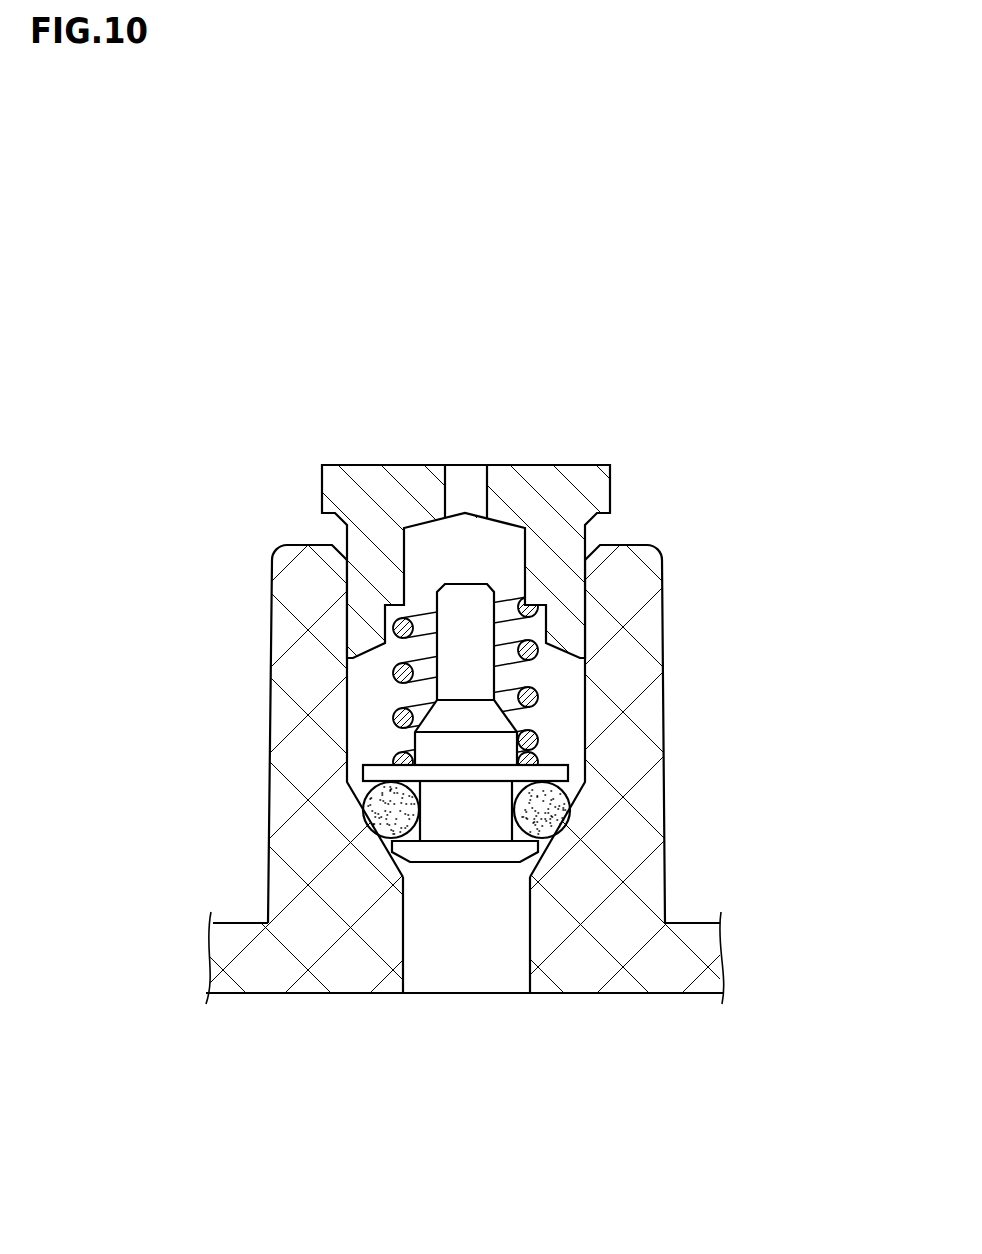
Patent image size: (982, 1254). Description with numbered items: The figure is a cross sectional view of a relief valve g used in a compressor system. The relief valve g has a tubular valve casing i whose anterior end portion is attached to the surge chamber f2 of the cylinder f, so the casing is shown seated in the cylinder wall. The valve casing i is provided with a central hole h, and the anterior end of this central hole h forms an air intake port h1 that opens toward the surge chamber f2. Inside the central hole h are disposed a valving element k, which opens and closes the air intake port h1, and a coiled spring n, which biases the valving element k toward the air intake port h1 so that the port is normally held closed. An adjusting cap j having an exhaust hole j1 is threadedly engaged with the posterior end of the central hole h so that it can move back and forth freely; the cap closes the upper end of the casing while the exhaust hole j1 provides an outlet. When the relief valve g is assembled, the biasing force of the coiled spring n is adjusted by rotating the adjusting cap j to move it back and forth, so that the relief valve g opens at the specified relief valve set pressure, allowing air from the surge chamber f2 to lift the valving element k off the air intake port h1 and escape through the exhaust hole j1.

The relief valve g is at (471, 590).
The adjusting cap j is at (478, 496).
The exhaust hole j1 is at (487, 493).
The coiled spring n is at (397, 715).
The central hole h is at (584, 717).
The valving element k is at (498, 753).
The valve casing i is at (643, 878).
The cylinder f is at (260, 975).
The surge chamber f2 is at (346, 1067).
The air intake port h1 is at (477, 993).